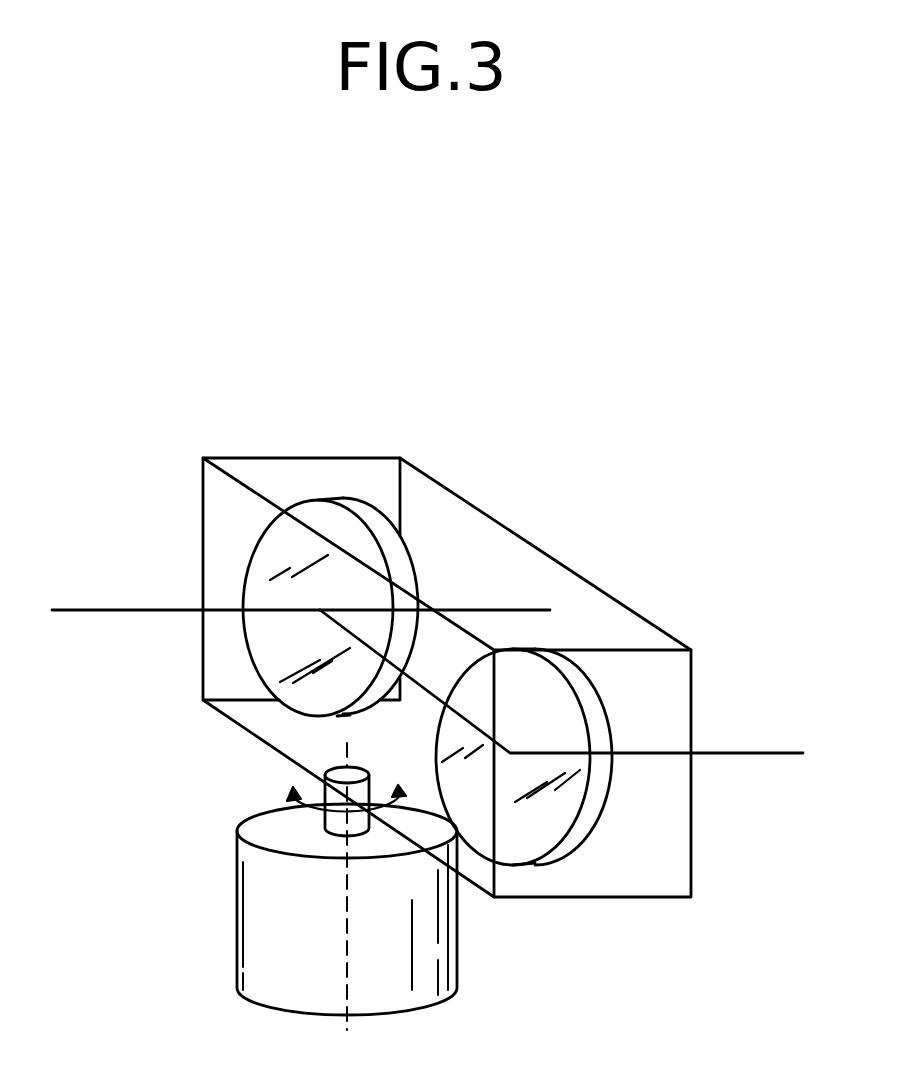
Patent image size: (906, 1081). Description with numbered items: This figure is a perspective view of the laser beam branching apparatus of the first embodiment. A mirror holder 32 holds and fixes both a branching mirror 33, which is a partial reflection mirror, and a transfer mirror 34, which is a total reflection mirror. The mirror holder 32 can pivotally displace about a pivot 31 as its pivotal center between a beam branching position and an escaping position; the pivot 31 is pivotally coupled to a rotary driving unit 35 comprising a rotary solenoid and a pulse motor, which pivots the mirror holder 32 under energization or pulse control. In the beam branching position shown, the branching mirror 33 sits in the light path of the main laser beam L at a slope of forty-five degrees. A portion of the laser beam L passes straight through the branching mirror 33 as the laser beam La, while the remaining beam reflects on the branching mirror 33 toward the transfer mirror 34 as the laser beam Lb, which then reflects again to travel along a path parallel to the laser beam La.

The pivot 31 is at (337, 775).
The mirror holder 32 is at (598, 613).
The branching mirror 33 is at (328, 515).
The transfer mirror 34 is at (553, 800).
The rotary driving unit 35 is at (430, 952).
The laser beam L is at (102, 615).
The laser beam La is at (500, 607).
The laser beam Lb is at (747, 755).